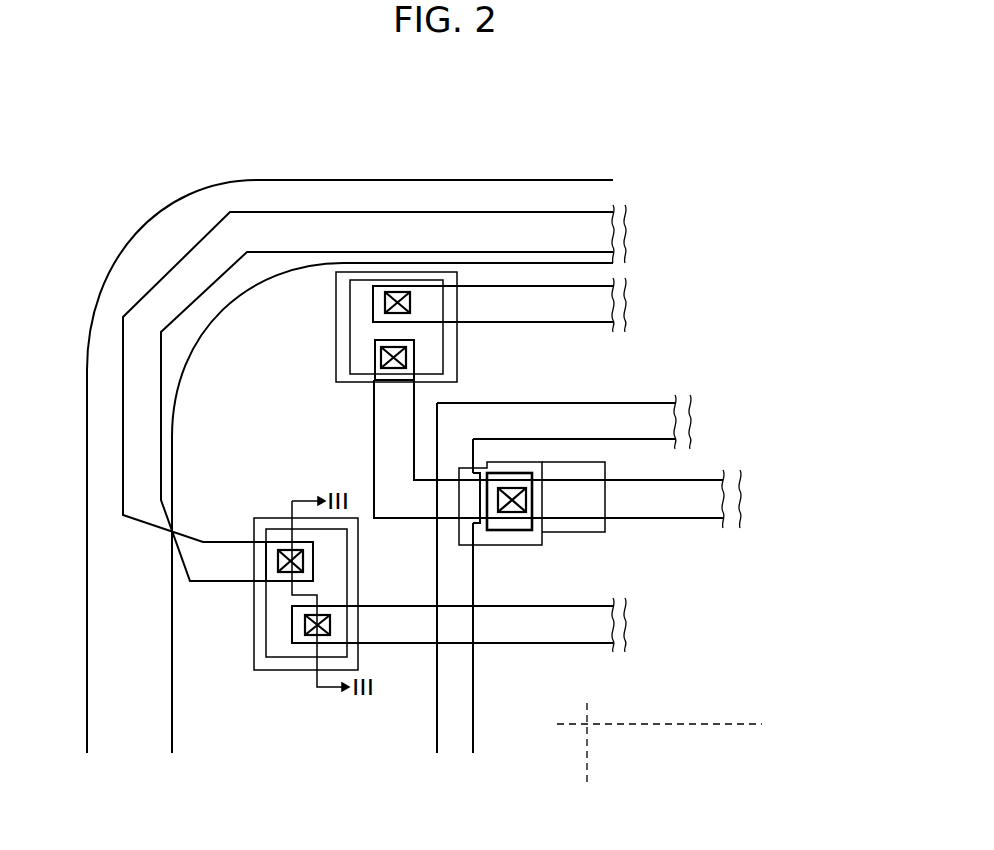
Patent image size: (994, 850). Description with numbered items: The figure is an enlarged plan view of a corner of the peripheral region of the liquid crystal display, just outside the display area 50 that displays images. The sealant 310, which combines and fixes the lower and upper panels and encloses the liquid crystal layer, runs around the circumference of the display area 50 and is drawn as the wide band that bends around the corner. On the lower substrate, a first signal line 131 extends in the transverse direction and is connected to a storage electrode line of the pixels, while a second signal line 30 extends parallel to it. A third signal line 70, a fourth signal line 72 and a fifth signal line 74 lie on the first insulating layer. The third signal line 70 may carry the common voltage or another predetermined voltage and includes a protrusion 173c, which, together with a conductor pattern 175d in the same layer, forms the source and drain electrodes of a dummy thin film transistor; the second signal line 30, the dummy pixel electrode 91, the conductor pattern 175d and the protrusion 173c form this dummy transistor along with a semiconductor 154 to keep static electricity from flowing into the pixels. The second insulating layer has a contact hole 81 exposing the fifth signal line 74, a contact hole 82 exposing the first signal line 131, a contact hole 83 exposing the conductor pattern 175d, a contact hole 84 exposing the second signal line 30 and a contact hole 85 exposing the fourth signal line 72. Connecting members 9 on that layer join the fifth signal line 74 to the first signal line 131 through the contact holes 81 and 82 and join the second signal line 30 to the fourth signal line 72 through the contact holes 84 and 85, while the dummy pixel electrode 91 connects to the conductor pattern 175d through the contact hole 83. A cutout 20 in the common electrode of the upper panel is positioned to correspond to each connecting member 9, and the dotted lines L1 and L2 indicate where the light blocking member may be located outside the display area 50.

The sealant 310 is at (295, 272).
The fifth signal line 74 is at (562, 212).
The fourth signal line 72 is at (614, 323).
The third signal line 70 is at (643, 403).
The second signal line 30 is at (702, 519).
The first signal line 131 is at (517, 644).
The cutout 20 is at (336, 318).
The connecting member 9 is at (350, 352).
The contact hole 85 is at (410, 302).
The contact hole 84 is at (406, 357).
The contact hole 81 is at (303, 560).
The contact hole 82 is at (310, 644).
The contact hole 83 is at (526, 500).
The conductor pattern 175d is at (532, 477).
The semiconductor 154 is at (533, 547).
The dummy pixel electrode 91 is at (605, 531).
The protrusion 173c is at (478, 528).
The display area 50 is at (678, 779).
The dotted line L1 is at (587, 760).
The dotted line L2 is at (672, 725).